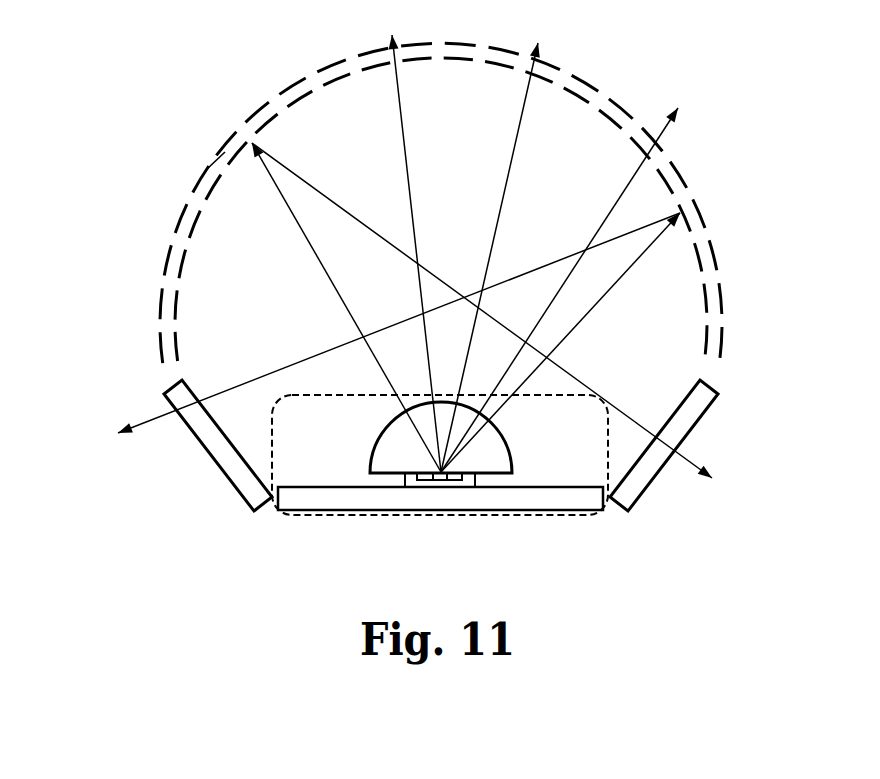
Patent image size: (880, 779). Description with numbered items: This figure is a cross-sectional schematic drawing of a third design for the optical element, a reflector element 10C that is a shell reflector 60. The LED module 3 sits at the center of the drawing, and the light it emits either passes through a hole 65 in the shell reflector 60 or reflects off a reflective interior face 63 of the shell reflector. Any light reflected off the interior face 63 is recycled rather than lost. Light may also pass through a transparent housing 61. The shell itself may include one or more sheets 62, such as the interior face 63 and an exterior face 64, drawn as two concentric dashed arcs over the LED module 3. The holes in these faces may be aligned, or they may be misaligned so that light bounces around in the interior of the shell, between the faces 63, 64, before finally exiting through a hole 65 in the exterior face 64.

The reflector element 10C is at (93, 87).
The LED module 3 is at (438, 516).
The shell reflector 60 is at (708, 402).
The transparent housing 61 is at (232, 458).
The sheets 62 is at (182, 242).
The reflective interior face 63 is at (213, 160).
The exterior face 64 is at (285, 90).
The hole 65 is at (343, 62).